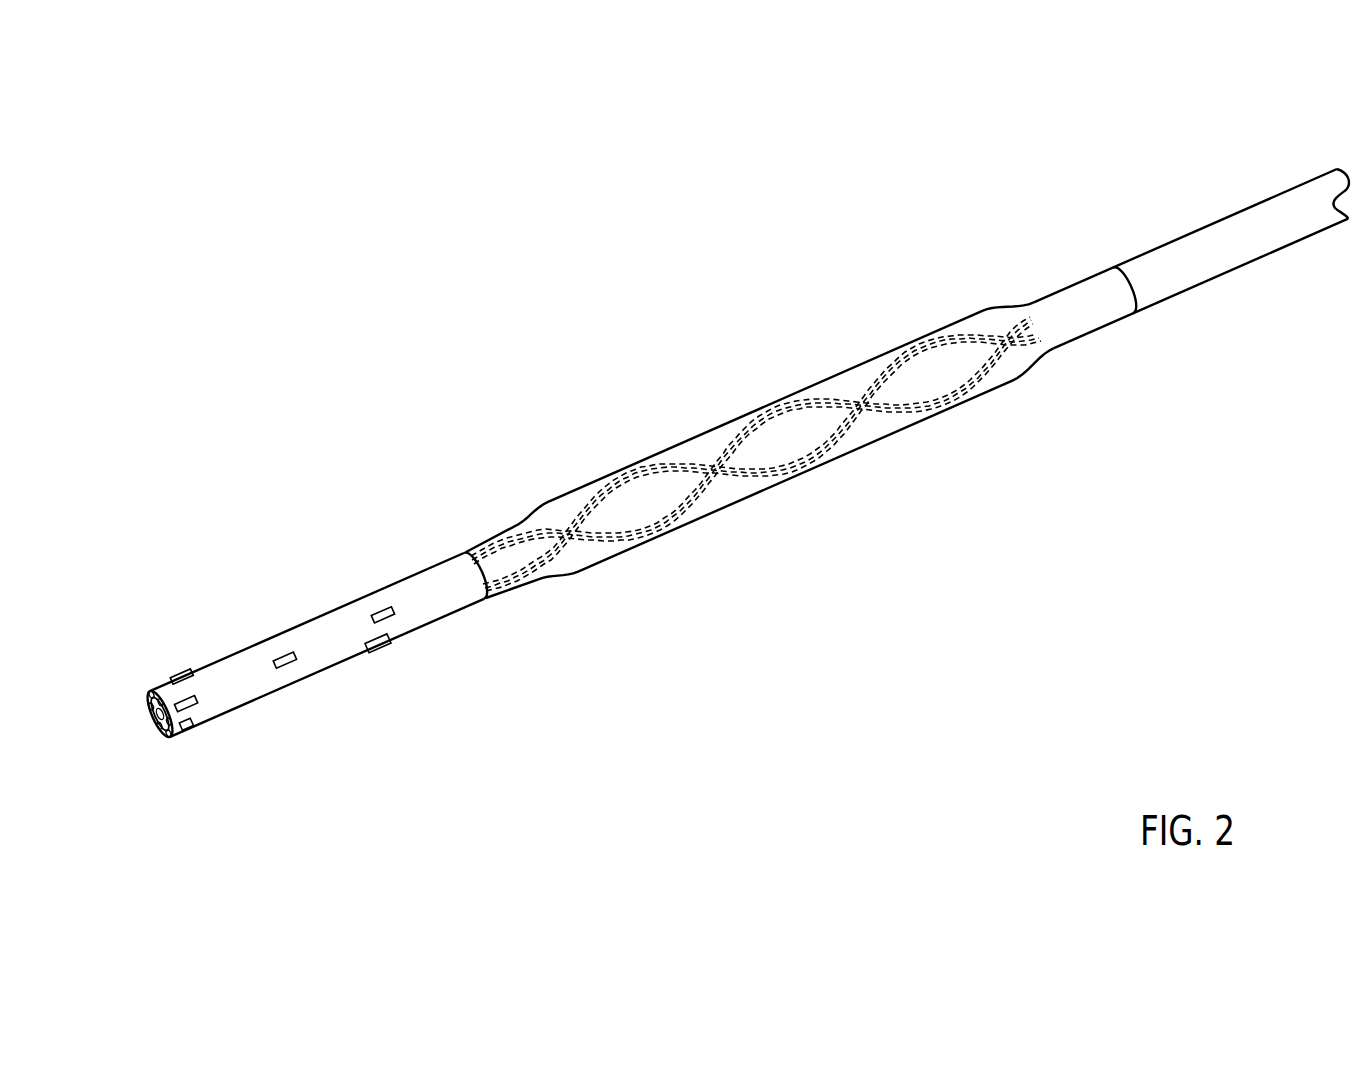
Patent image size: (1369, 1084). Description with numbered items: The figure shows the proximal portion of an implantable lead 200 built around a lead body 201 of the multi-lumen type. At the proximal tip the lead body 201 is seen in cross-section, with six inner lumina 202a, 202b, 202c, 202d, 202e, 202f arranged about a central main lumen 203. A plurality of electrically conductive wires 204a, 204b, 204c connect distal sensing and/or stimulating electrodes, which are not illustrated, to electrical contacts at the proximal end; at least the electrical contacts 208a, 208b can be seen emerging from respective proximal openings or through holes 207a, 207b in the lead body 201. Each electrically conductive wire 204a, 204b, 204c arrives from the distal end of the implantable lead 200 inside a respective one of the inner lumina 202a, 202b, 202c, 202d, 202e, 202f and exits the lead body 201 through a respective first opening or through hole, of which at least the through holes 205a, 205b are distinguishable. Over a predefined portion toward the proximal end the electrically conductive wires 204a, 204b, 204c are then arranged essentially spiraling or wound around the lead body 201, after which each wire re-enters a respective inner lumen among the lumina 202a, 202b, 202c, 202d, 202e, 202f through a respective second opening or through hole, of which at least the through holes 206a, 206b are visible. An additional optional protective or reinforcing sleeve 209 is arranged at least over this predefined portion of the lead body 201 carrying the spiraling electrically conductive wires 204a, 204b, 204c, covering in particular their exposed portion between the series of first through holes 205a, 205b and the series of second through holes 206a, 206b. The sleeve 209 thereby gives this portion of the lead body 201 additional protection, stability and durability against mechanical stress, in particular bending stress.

The implantable lead 200 is at (1054, 483).
The lead body 201 is at (1187, 250).
The inner lumen 202a is at (152, 695).
The inner lumen 202b is at (147, 707).
The inner lumen 202c is at (148, 722).
The inner lumen 202d is at (157, 737).
The inner lumen 202e is at (167, 733).
The inner lumen 202f is at (170, 712).
The main lumen 203 is at (150, 736).
The electrically conductive wire 204a is at (955, 323).
The electrically conductive wire 204b is at (878, 357).
The electrically conductive wire 204c is at (810, 387).
The first through hole 205a is at (1037, 286).
The first through hole 205b is at (1046, 368).
The second through hole 206a is at (531, 511).
The second through hole 206b is at (549, 580).
The proximal through hole 207a is at (202, 658).
The proximal through hole 207b is at (374, 657).
The electrical contact 208a is at (173, 677).
The electrical contact 208b is at (378, 648).
The sleeve 209 is at (688, 440).